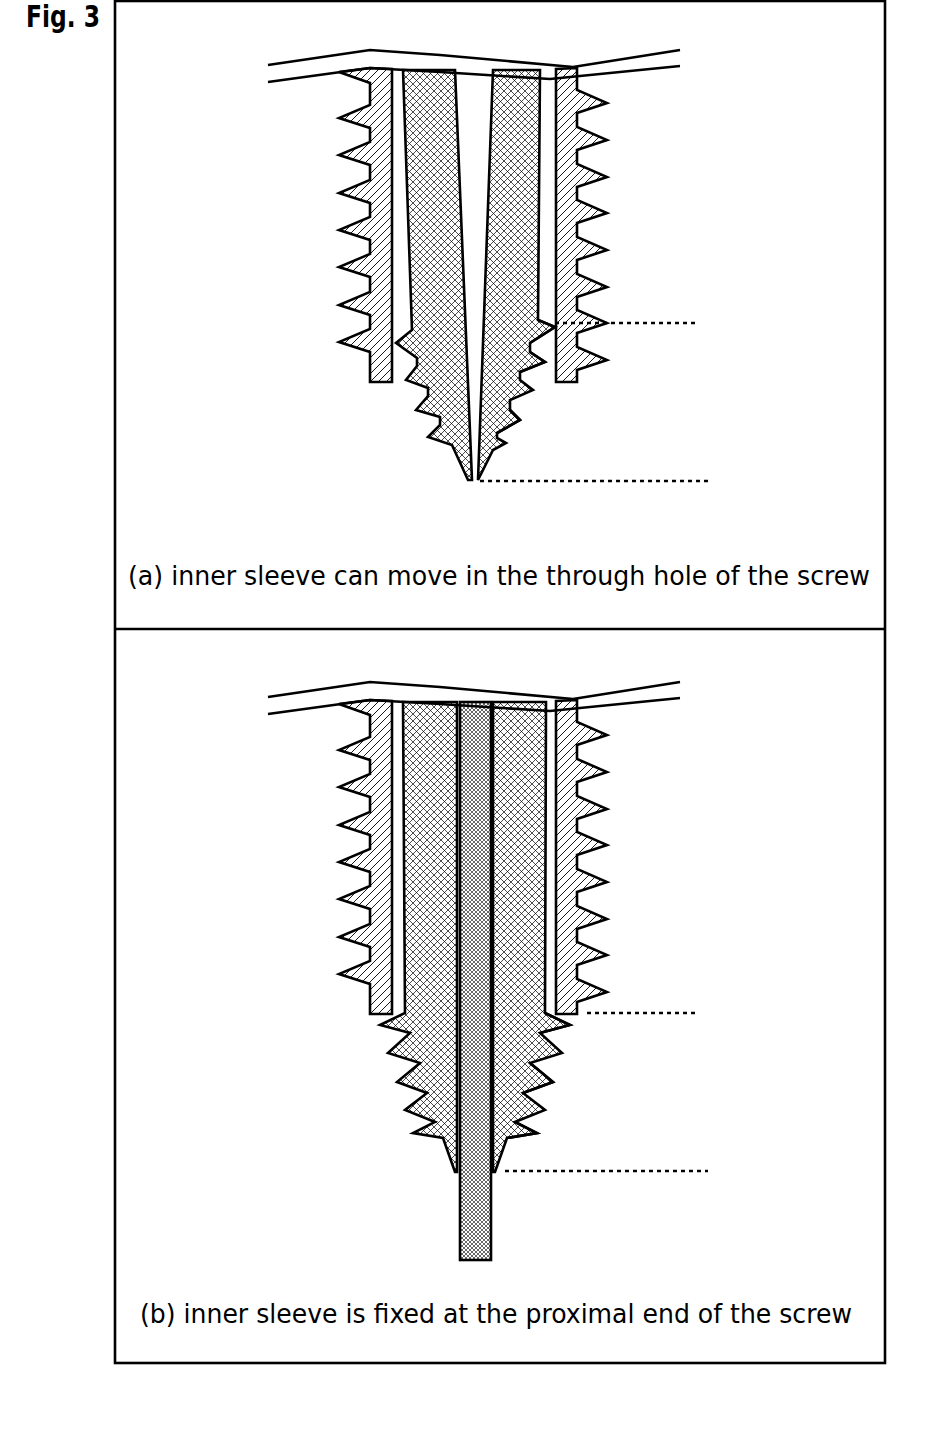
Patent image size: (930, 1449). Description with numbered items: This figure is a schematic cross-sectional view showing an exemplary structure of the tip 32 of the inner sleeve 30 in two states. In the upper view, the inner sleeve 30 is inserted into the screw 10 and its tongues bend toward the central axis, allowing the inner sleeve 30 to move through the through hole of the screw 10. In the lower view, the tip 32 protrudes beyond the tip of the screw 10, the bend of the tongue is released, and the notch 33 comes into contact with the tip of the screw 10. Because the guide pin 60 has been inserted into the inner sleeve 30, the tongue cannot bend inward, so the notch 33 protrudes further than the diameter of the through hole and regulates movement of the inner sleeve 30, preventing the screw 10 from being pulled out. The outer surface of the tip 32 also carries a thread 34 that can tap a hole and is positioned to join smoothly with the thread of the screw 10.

The screw 10 is at (572, 267).
The inner sleeve 30 is at (525, 172).
The tip of inner sleeve 32 is at (713, 323).
The notch 33 is at (552, 328).
The thread 34 is at (517, 377).
The guide pin 60 is at (477, 1192).